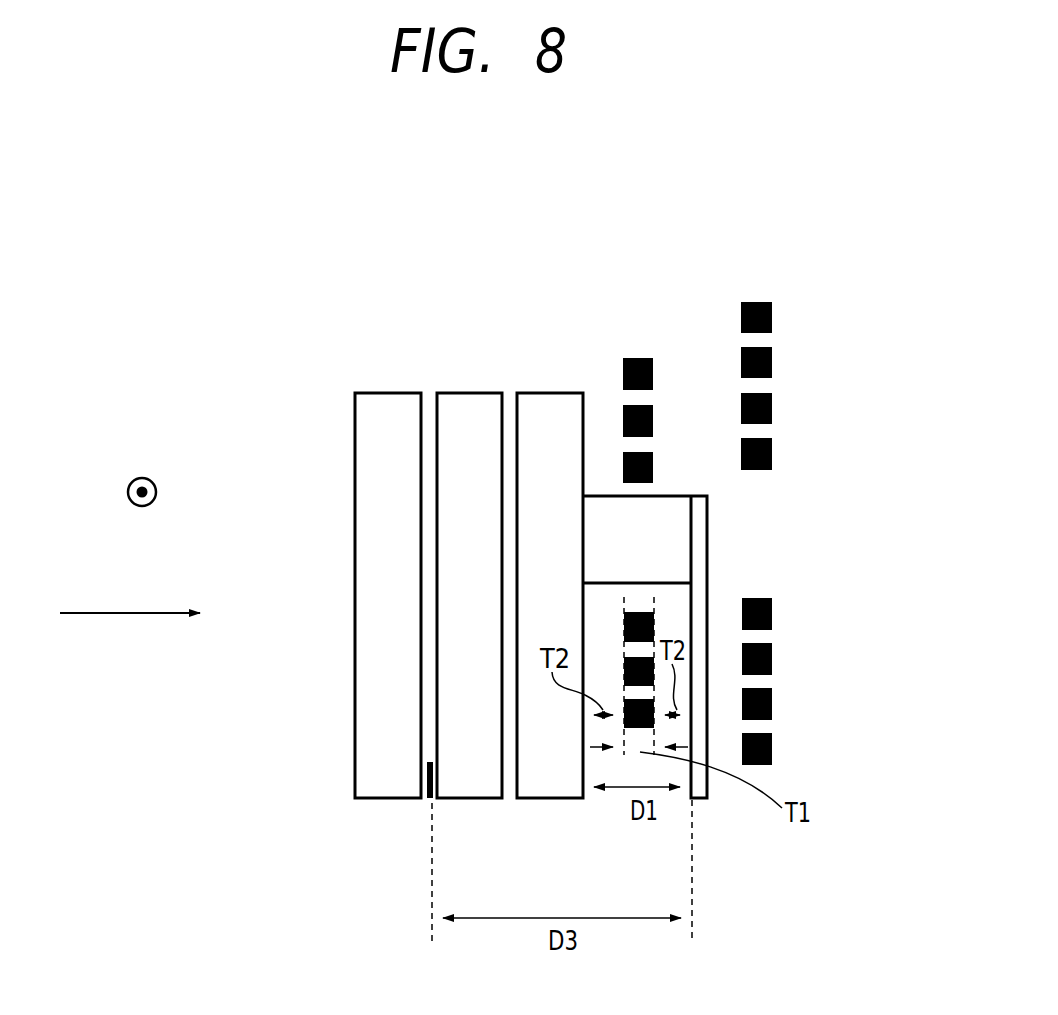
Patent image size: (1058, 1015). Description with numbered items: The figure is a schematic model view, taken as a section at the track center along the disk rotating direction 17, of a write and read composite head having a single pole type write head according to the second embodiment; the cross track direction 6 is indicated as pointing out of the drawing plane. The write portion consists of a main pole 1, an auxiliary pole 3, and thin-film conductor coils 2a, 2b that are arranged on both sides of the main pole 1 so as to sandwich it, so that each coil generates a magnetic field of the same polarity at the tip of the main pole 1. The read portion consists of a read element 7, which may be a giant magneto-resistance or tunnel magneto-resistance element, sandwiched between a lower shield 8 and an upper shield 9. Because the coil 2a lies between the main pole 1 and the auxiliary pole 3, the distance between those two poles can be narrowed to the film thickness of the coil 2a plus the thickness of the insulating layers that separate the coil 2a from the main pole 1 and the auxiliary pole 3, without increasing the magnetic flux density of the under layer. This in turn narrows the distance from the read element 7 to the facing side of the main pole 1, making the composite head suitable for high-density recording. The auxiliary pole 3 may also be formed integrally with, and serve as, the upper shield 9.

The main pole 1 is at (702, 807).
The thin-film conductor coil 2a is at (643, 355).
The thin-film conductor coil 2b is at (757, 296).
The auxiliary pole 3 is at (544, 421).
The cross track direction 6 is at (150, 527).
The read element 7 is at (426, 804).
The lower shield 8 is at (386, 416).
The upper shield 9 is at (464, 421).
The disk rotating direction 17 is at (143, 649).